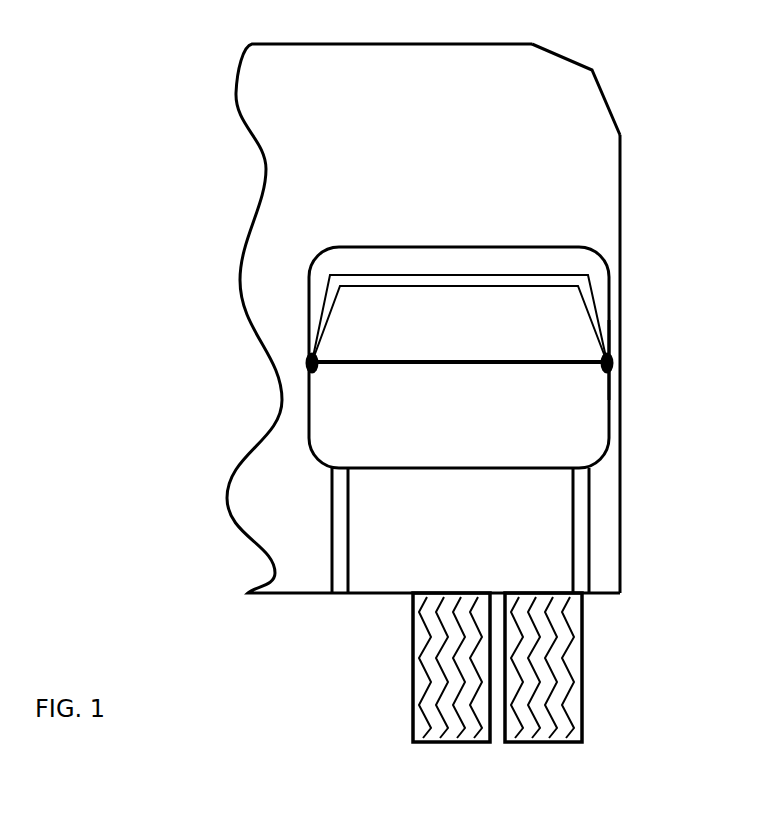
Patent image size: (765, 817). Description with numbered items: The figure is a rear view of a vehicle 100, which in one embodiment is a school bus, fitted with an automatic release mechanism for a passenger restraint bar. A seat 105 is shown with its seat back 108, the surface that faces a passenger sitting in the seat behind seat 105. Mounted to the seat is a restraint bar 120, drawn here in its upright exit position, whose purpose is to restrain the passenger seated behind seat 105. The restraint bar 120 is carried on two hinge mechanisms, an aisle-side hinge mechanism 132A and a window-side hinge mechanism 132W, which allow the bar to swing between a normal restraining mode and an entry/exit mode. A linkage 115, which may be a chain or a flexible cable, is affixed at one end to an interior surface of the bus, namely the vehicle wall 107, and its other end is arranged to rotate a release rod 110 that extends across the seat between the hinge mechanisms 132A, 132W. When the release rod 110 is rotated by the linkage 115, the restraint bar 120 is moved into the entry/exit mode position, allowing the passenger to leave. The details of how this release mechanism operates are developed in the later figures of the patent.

The vehicle 100 is at (247, 35).
The seat 105 is at (410, 215).
The vehicle wall 107 is at (620, 272).
The seat back 108 is at (358, 262).
The release rod 110 is at (497, 365).
The linkage 115 is at (616, 343).
The restraint bar 120 is at (468, 280).
The aisle-side hinge mechanism 132A is at (318, 372).
The window-side hinge mechanism 132W is at (607, 375).